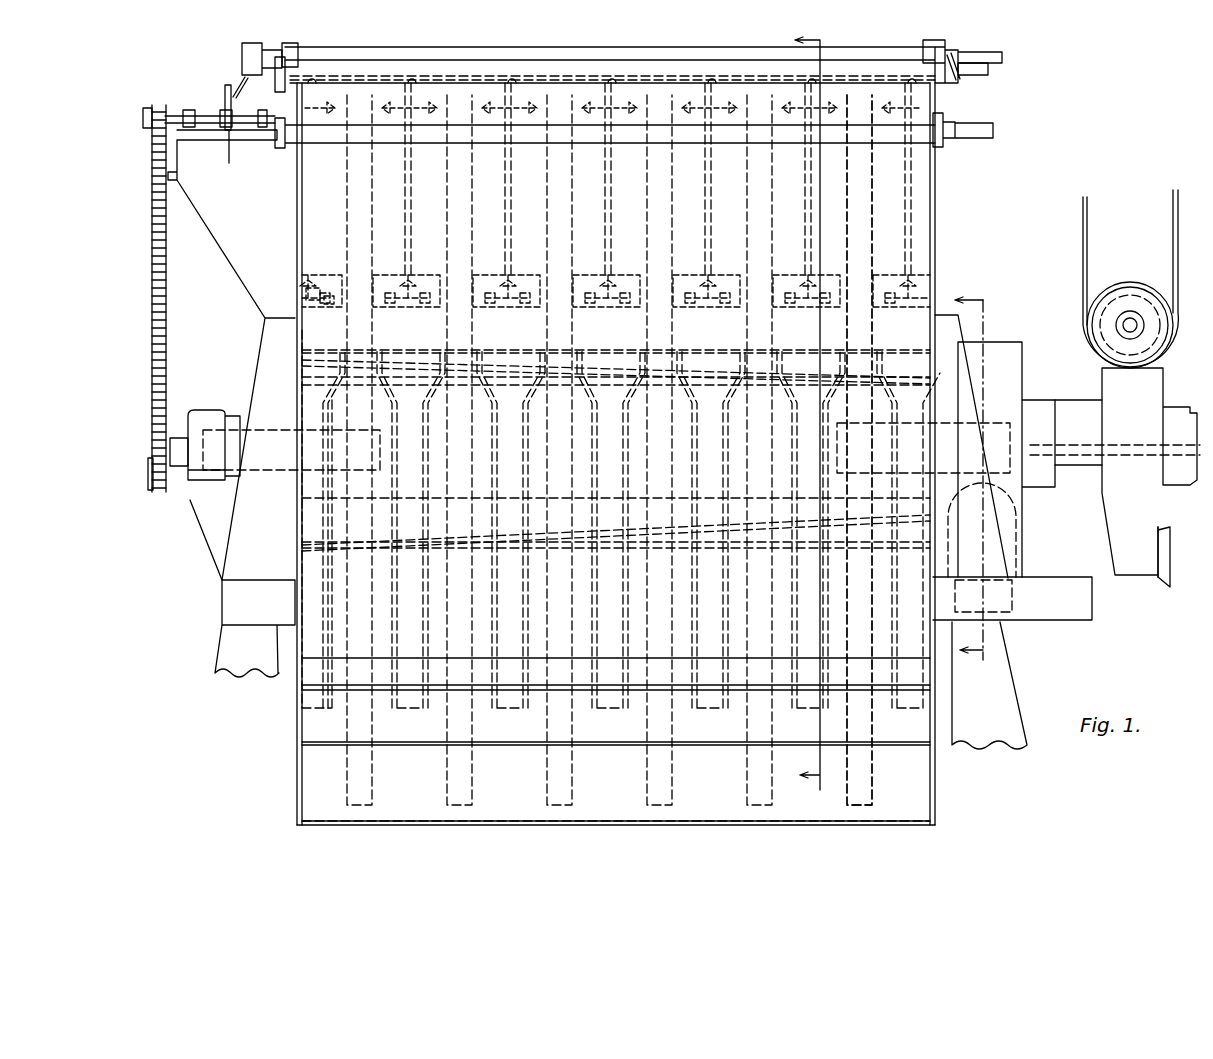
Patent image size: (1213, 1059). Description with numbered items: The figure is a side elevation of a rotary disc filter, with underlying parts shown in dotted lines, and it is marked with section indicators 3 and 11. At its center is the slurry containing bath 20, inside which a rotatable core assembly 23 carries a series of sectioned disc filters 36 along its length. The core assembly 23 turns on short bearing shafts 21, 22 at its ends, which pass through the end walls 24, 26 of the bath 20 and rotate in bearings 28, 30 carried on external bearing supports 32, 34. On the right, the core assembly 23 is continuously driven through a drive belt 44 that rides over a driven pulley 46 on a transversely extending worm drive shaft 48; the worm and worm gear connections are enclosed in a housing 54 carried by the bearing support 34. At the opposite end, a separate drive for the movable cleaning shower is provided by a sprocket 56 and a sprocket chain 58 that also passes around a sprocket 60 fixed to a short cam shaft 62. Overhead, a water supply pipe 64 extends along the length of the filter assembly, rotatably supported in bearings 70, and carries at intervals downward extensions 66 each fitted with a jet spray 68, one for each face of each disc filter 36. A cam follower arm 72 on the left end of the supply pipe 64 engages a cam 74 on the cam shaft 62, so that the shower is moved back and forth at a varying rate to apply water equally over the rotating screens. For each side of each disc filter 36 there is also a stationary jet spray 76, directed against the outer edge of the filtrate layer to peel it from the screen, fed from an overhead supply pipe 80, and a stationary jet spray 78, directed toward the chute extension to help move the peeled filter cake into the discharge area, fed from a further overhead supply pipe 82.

The slurry containing bath 20 is at (940, 207).
The short shaft 21 is at (272, 470).
The short shaft 22 is at (1000, 435).
The core assembly 23 is at (905, 385).
The end wall 24 is at (296, 215).
The end wall 26 is at (935, 255).
The bearing 28 is at (205, 410).
The bearing 30 is at (1057, 400).
The external bearing support 32 is at (222, 600).
The external bearing support 34 is at (1085, 578).
The sectioned disc filters 36 is at (347, 782).
The drive belt 44 is at (1175, 208).
The driven pulley 46 is at (1172, 325).
The worm drive shaft 48 is at (1130, 322).
The housing 54 is at (1160, 520).
The sprocket 56 is at (152, 482).
The sprocket chain 58 is at (153, 380).
The sprocket 60 is at (145, 125).
The cam shaft 62 is at (172, 116).
The water supply pipe 64 is at (1000, 56).
The downward extension 66 is at (312, 292).
The jet spray 68 is at (330, 304).
The bearing 70 is at (958, 96).
The cam follower arm 72 is at (233, 90).
The cam 74 is at (228, 132).
The stationary jet spray 76 is at (332, 112).
The stationary jet spray 78 is at (312, 285).
The supply pipe 80 is at (990, 132).
The supply pipe 82 is at (990, 70).
The section line 3 is at (813, 425).
The section line II 11 is at (975, 476).